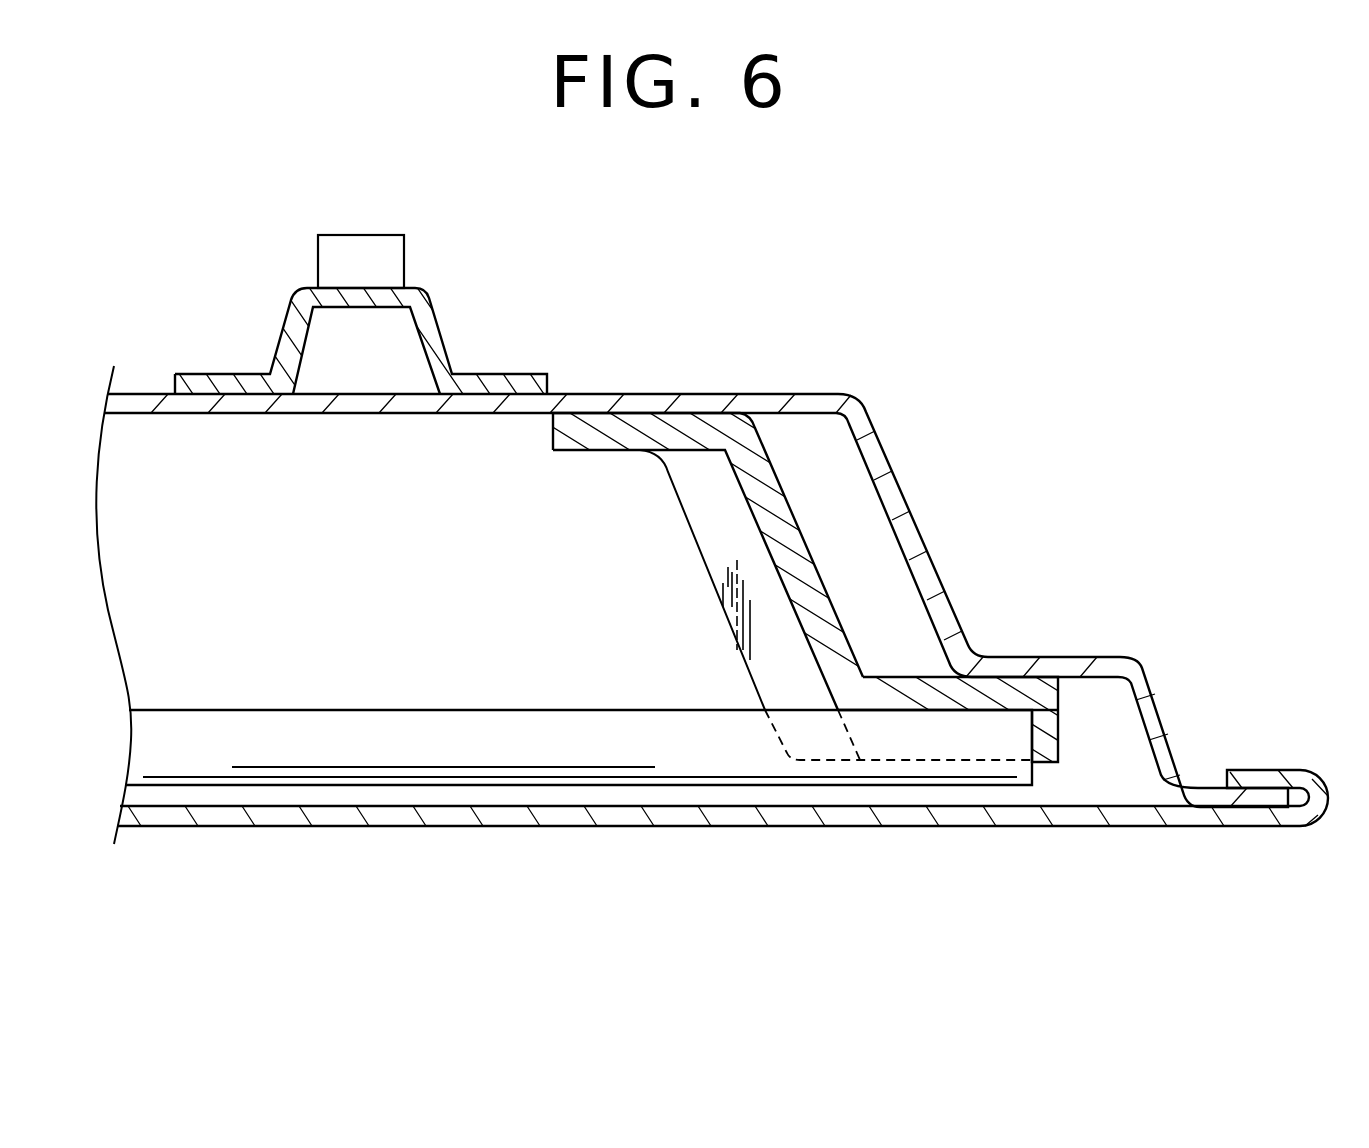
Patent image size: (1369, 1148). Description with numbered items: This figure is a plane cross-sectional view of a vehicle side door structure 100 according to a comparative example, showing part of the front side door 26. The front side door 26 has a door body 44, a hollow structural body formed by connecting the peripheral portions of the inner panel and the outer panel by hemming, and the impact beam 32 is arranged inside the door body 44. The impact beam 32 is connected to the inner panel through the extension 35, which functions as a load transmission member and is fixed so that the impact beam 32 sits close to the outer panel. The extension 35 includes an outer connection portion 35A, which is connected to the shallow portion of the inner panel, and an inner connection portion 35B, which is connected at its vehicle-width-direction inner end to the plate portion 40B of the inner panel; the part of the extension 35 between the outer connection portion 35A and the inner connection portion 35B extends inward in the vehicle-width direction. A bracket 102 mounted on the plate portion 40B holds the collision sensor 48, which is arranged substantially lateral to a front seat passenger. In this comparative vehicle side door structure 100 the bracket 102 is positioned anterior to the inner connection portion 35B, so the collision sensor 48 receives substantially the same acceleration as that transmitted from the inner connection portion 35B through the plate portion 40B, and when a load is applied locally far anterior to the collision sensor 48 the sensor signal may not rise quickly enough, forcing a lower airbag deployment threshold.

The vehicle side door structure 100 is at (932, 220).
The collision sensor 48 is at (342, 240).
The bracket 102 is at (437, 320).
The inner connection portion 35B is at (640, 420).
The plate portion 40B is at (466, 415).
The outer connection portion 35A is at (982, 690).
The extension 35 is at (730, 629).
The impact beam 32 is at (430, 727).
The door body 44 is at (668, 828).
The front side door 26 is at (722, 798).